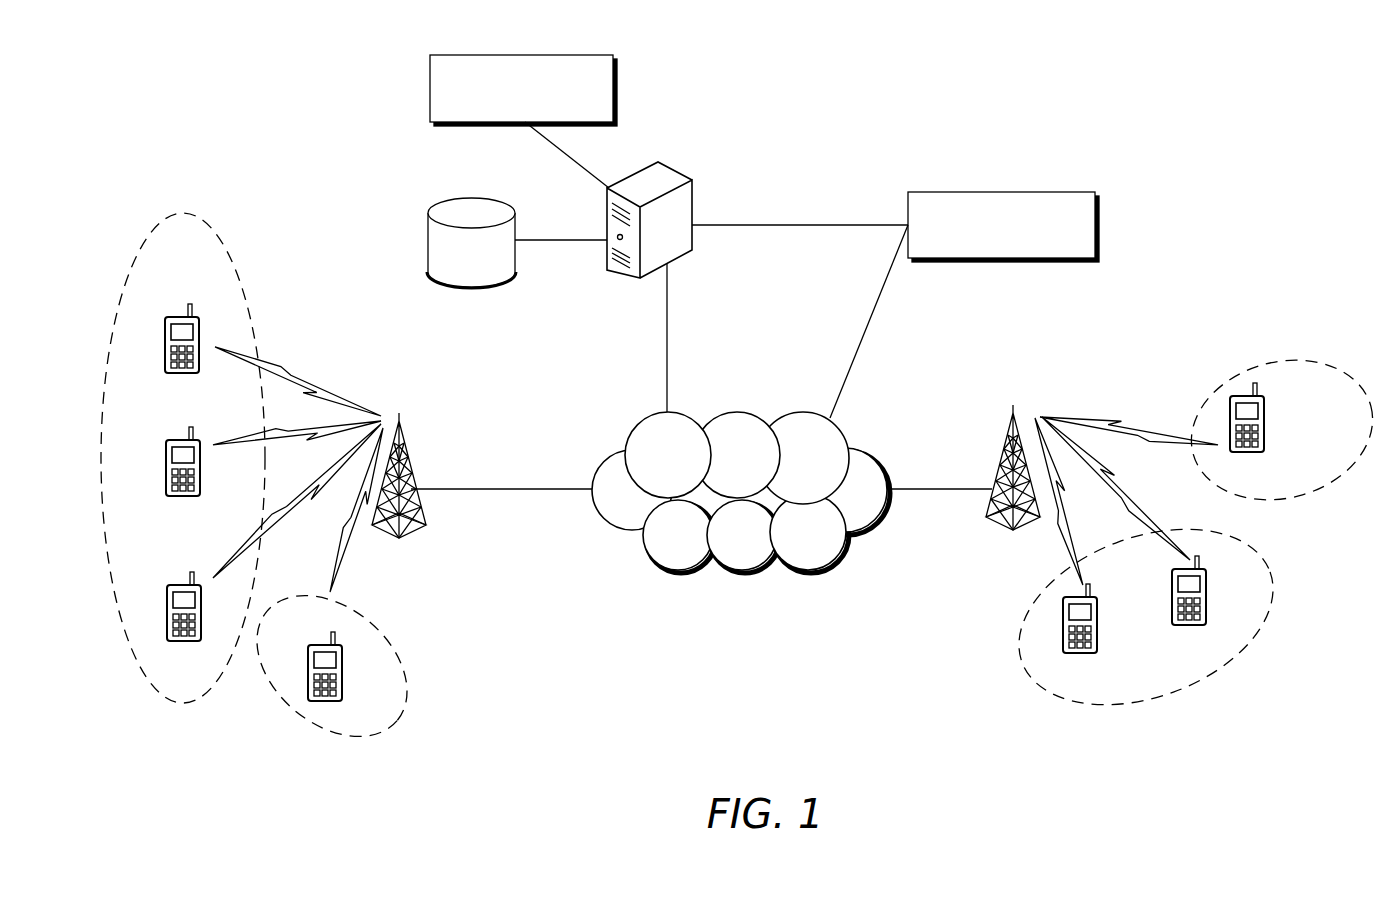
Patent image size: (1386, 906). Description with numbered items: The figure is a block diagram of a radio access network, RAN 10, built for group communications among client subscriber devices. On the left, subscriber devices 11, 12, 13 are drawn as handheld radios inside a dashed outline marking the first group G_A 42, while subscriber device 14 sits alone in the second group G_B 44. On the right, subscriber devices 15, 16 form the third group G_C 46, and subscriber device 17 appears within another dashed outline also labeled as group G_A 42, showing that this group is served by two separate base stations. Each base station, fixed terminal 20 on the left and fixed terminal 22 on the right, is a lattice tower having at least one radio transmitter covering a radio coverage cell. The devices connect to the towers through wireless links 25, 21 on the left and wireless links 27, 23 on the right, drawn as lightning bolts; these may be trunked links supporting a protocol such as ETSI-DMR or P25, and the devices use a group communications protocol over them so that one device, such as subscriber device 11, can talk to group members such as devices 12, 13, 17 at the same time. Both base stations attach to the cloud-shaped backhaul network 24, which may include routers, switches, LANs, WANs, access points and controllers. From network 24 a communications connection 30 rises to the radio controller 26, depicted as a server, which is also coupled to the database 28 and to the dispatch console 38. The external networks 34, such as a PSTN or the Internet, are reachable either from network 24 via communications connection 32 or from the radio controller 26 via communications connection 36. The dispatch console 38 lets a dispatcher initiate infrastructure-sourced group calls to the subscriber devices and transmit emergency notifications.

The RAN 10 is at (170, 81).
The subscriber device 11 is at (184, 316).
The subscriber device 12 is at (184, 439).
The subscriber device 13 is at (184, 584).
The subscriber device 14 is at (330, 644).
The subscriber device 15 is at (1097, 612).
The subscriber device 16 is at (1204, 582).
The subscriber device 17 is at (1262, 410).
The fixed terminal 20 is at (407, 460).
The wireless link 21 is at (358, 565).
The fixed terminal 22 is at (1008, 445).
The wireless link 23 is at (1050, 538).
The backhaul network 24 is at (641, 420).
The wireless link 25 is at (300, 322).
The radio controller 26 is at (694, 212).
The wireless link 27 is at (1145, 395).
The database 28 is at (472, 198).
The communications connection 30 is at (668, 318).
The communications connection 32 is at (874, 318).
The external networks 34 is at (1002, 192).
The communications connection 36 is at (803, 225).
The dispatch console 38 is at (431, 88).
The first group G_A 42 is at (180, 215).
The second group G_B 44 is at (385, 637).
The third group G_C 46 is at (1265, 562).